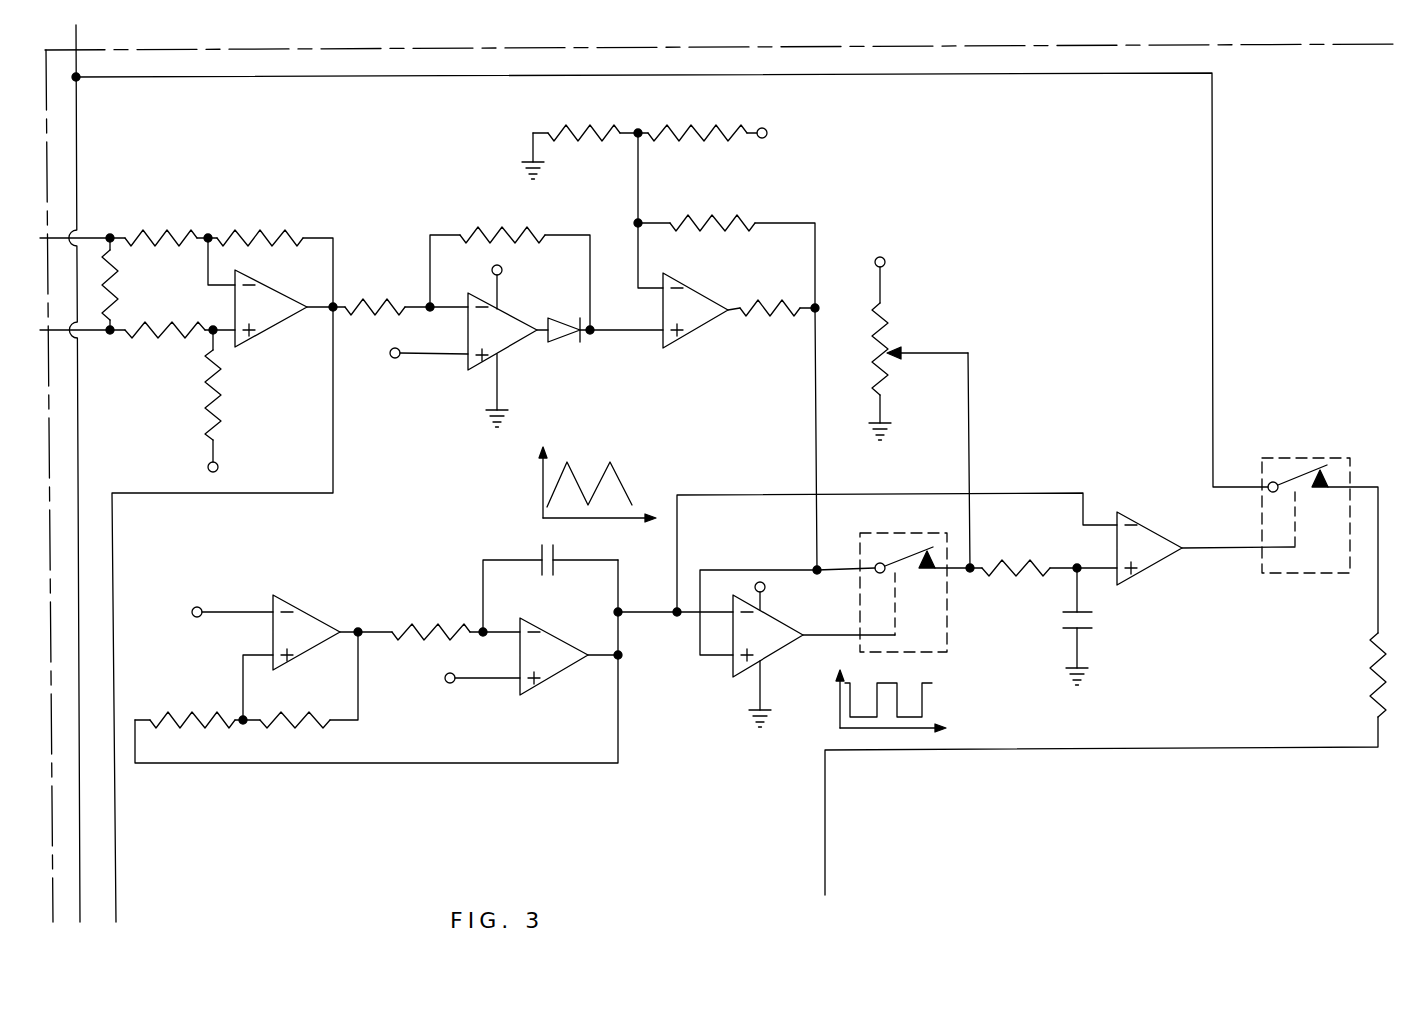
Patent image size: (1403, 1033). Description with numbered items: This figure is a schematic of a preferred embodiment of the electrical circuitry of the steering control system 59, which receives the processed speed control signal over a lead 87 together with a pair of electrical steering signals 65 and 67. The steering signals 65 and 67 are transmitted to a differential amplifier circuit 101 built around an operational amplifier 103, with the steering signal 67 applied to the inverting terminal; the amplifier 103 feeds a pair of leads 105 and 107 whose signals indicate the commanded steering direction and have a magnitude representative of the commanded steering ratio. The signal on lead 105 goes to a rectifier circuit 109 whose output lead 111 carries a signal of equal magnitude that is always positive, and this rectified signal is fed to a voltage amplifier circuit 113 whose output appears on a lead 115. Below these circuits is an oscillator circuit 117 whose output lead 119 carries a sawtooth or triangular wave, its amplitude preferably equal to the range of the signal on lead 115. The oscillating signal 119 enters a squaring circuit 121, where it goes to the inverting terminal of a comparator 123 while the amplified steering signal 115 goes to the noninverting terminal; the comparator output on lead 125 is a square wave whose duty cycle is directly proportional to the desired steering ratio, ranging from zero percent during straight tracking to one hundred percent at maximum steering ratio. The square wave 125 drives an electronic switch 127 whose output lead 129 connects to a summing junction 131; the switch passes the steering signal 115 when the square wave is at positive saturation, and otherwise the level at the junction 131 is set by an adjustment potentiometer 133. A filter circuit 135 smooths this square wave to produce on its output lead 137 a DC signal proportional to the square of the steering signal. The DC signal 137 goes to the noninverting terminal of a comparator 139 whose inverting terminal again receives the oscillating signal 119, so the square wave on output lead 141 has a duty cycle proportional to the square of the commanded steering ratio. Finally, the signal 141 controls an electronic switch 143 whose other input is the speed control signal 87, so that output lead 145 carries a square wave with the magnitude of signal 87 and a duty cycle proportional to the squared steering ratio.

The steering control system 59 is at (878, 46).
The electrical steering signal 65 is at (92, 333).
The electrical steering signal 67 is at (88, 238).
The lead 87 is at (78, 135).
The differential amplifier circuit 101 is at (268, 208).
The operational amplifier 103 is at (278, 290).
The lead 105 is at (345, 300).
The lead 107 is at (336, 408).
The rectifier circuit 109 is at (499, 213).
The lead 111 is at (637, 333).
The voltage amplifier circuit 113 is at (776, 194).
The lead 115 is at (815, 370).
The oscillator circuit 117 is at (434, 575).
The lead 119 is at (622, 522).
The squaring circuit 121 is at (736, 720).
The comparator 123 is at (793, 617).
The lead 125 is at (823, 640).
The electronic switch 127 is at (917, 530).
The output lead 129 is at (960, 573).
The summing junction 131 is at (975, 556).
The adjustment potentiometer 133 is at (920, 324).
The filter circuit 135 is at (1042, 605).
The output lead 137 is at (1098, 572).
The comparator 139 is at (1157, 529).
The lead 141 is at (1208, 552).
The electronic switch 143 is at (1295, 456).
The output lead 145 is at (1380, 510).